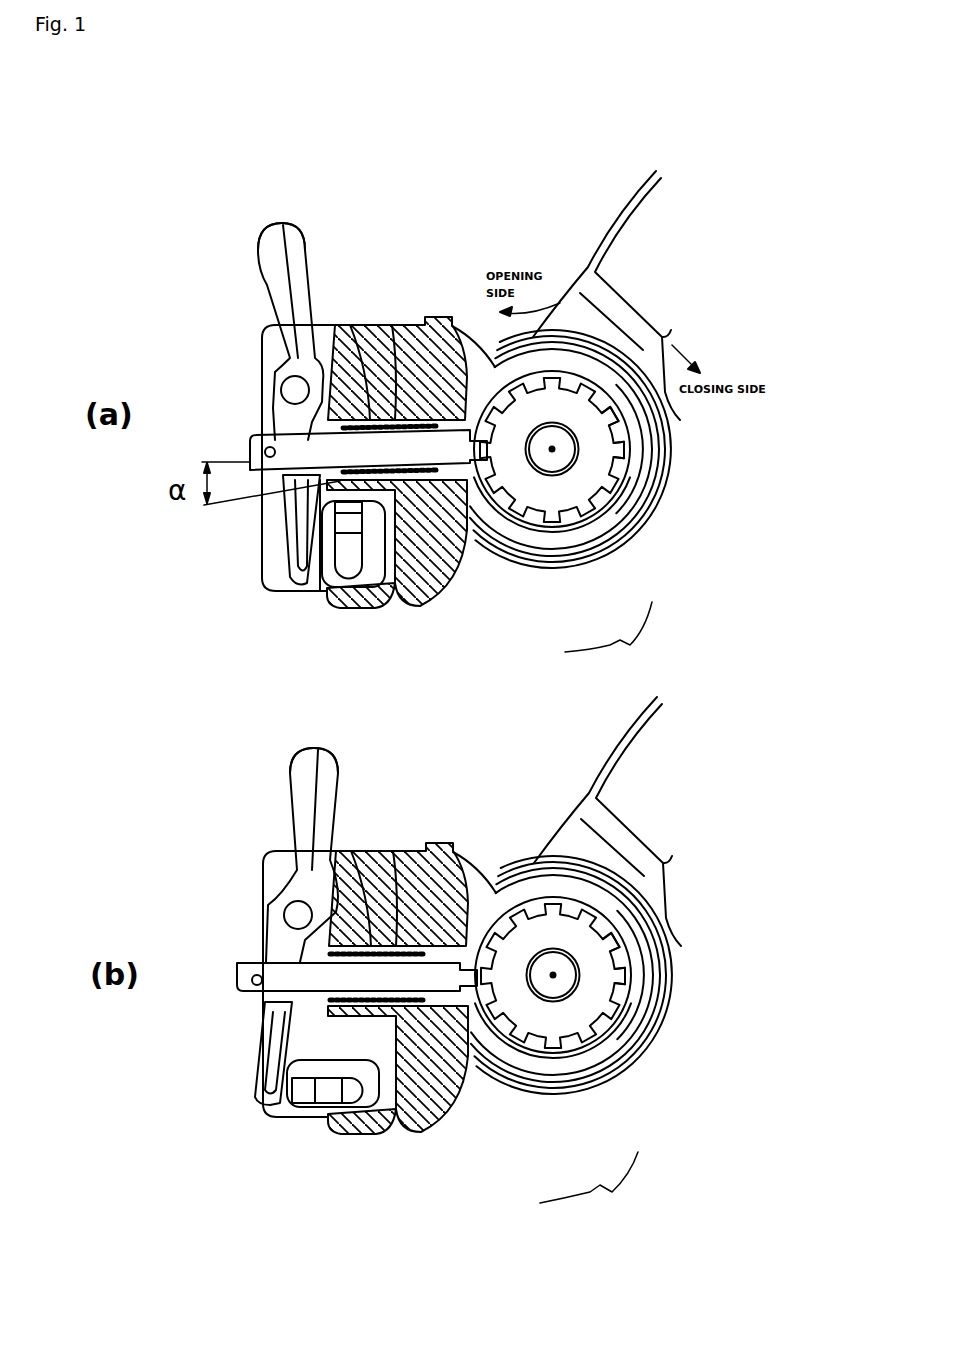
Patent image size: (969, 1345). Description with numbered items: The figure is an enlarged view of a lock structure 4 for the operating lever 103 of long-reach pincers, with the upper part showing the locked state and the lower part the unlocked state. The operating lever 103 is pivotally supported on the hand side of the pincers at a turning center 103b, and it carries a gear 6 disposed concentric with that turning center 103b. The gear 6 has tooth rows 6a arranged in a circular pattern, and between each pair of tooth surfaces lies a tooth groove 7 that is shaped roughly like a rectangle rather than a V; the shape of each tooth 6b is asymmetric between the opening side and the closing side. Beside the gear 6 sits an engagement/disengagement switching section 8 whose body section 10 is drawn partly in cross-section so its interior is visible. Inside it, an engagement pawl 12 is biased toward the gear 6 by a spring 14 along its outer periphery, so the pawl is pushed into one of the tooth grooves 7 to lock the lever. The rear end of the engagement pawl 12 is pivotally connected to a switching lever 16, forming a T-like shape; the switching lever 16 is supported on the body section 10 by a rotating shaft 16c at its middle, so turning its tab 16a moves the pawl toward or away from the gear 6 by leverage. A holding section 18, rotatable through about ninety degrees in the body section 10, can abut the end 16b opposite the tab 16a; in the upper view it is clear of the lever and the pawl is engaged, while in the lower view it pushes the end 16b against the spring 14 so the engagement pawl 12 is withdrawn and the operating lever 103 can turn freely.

The lock structure 4 is at (596, 919).
The gear 6 is at (580, 482).
The tooth rows 6a is at (613, 393).
The tooth 6b is at (695, 715).
The tooth groove 7 is at (630, 470).
The engagement/disengagement switching section 8 is at (448, 597).
The body section 10 is at (390, 325).
The engagement pawl 12 is at (445, 413).
The spring 14 is at (350, 325).
The switching lever 16 is at (258, 223).
The tab 16a is at (280, 268).
The end 16b is at (300, 545).
The rotating shaft 16c is at (295, 390).
The holding section 18 is at (372, 566).
The operating lever 103 is at (627, 237).
The turning center 103b is at (552, 449).